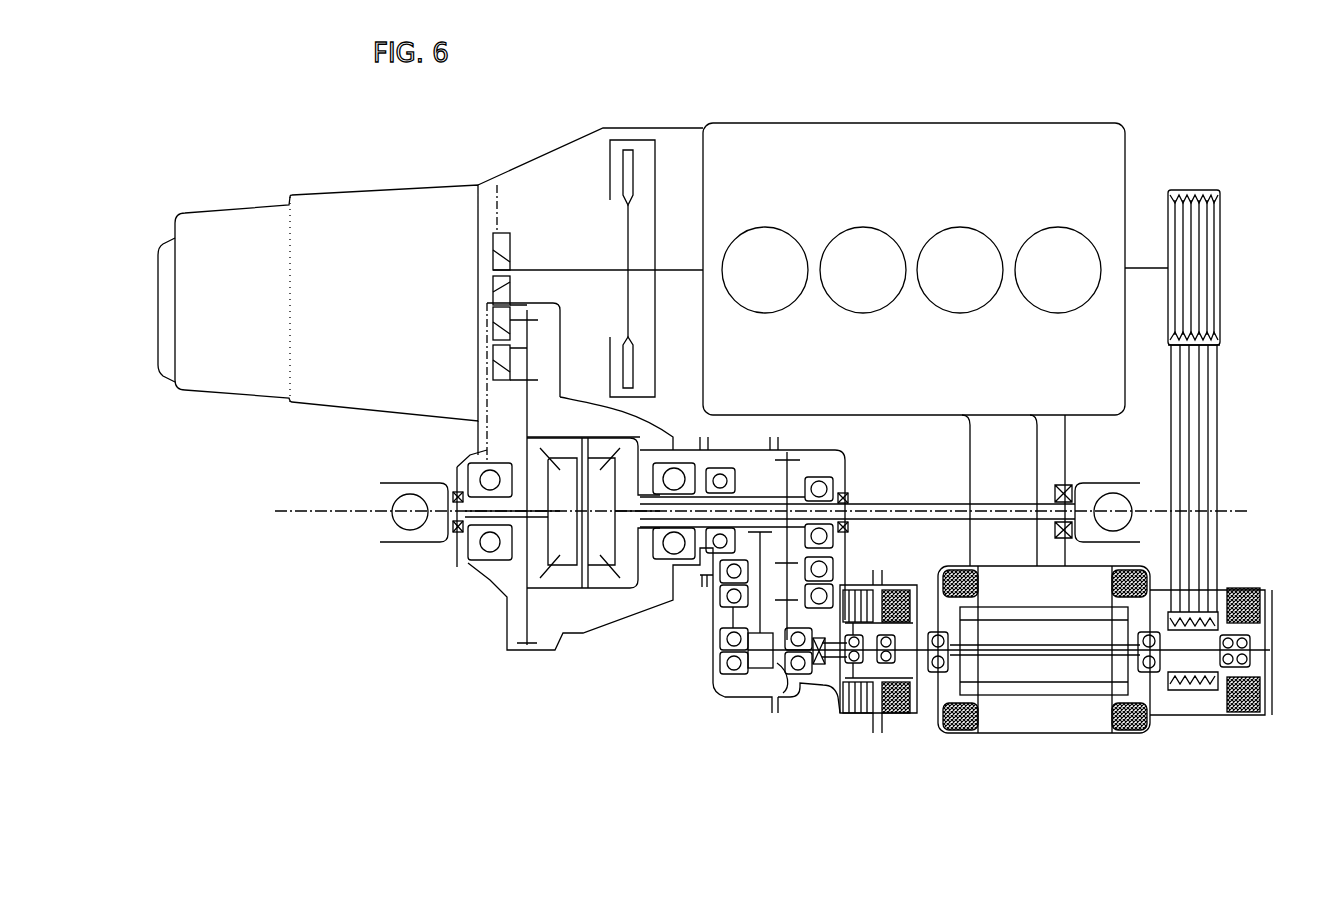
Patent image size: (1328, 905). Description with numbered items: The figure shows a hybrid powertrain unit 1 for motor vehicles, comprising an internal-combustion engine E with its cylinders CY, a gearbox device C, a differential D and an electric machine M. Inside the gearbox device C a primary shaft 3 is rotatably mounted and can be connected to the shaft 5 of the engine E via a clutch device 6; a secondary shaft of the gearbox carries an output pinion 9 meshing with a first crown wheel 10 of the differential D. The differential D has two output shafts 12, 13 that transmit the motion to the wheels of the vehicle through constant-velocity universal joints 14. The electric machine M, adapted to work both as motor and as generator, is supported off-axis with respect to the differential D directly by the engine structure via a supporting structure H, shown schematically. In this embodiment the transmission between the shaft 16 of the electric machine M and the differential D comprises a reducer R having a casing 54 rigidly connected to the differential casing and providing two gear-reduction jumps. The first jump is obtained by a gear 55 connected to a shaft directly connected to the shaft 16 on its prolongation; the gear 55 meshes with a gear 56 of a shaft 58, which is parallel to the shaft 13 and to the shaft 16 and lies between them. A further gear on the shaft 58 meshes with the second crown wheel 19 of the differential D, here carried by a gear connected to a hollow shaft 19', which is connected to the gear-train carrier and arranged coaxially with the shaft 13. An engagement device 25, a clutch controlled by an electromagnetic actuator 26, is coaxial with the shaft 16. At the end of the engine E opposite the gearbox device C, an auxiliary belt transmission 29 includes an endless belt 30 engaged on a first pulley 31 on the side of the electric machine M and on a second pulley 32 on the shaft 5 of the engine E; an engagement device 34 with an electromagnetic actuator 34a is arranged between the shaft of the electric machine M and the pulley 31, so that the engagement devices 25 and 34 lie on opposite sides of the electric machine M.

The hybrid powertrain unit 1 is at (262, 142).
The gearbox device C is at (158, 278).
The internal-combustion engine E is at (1118, 158).
The cylinders CY is at (838, 235).
The primary shaft 3 is at (588, 268).
The shaft of the engine 5 is at (690, 268).
The clutch device 6 is at (658, 185).
The output pinion 9 is at (527, 342).
The first crown wheel 10 is at (530, 400).
The output shaft 12 is at (473, 532).
The output shaft 13 is at (905, 505).
The constant-velocity universal joints 14 is at (408, 503).
The second crown wheel 19 is at (806, 539).
The hollow shaft 19' is at (722, 490).
The supporting structure H is at (990, 455).
The differential D is at (490, 612).
The reducer R is at (703, 676).
The casing of the reducer 54 is at (725, 688).
The gear 55 is at (783, 693).
The gear 56 is at (720, 640).
The shaft 58 is at (720, 595).
The engagement device 25 is at (856, 718).
The electromagnetic actuator 26 is at (895, 715).
The electric machine M is at (1052, 740).
The shaft of the electric machine 16 is at (1085, 655).
The auxiliary belt transmission 29 is at (1228, 466).
The endless belt 30 is at (1205, 392).
The first pulley 31 is at (1195, 692).
The second pulley 32 is at (1212, 252).
The engagement device 34 is at (1272, 722).
The electromagnetic actuator 34a is at (1240, 593).